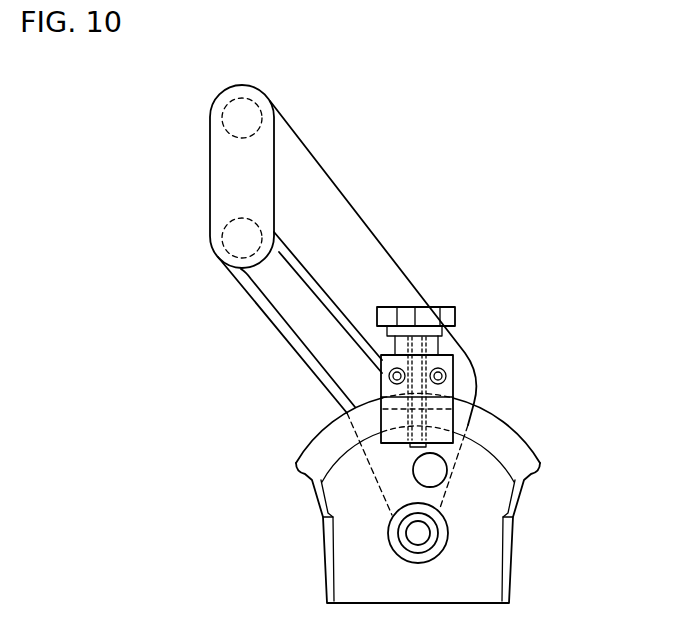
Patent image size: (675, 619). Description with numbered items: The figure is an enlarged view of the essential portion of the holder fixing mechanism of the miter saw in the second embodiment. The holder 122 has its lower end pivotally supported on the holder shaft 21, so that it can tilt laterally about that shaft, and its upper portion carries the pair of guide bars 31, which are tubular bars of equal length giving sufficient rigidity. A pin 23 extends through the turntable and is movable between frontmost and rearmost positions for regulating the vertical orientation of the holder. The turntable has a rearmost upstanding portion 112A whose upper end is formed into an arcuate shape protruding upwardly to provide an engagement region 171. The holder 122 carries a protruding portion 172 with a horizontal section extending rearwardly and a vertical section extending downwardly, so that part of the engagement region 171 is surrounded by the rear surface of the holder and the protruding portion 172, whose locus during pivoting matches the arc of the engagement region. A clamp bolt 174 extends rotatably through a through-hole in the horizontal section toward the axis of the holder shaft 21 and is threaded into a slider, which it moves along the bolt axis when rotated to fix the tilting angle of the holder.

The guide bars 31 is at (222, 110).
The holder 122 is at (291, 348).
The protruding portion 172 is at (383, 409).
The clamp bolt 174 is at (447, 307).
The engagement region 171 is at (455, 408).
The pin 23 is at (413, 471).
The holder shaft 21 is at (407, 534).
The rearmost upstanding portion 112A is at (492, 489).